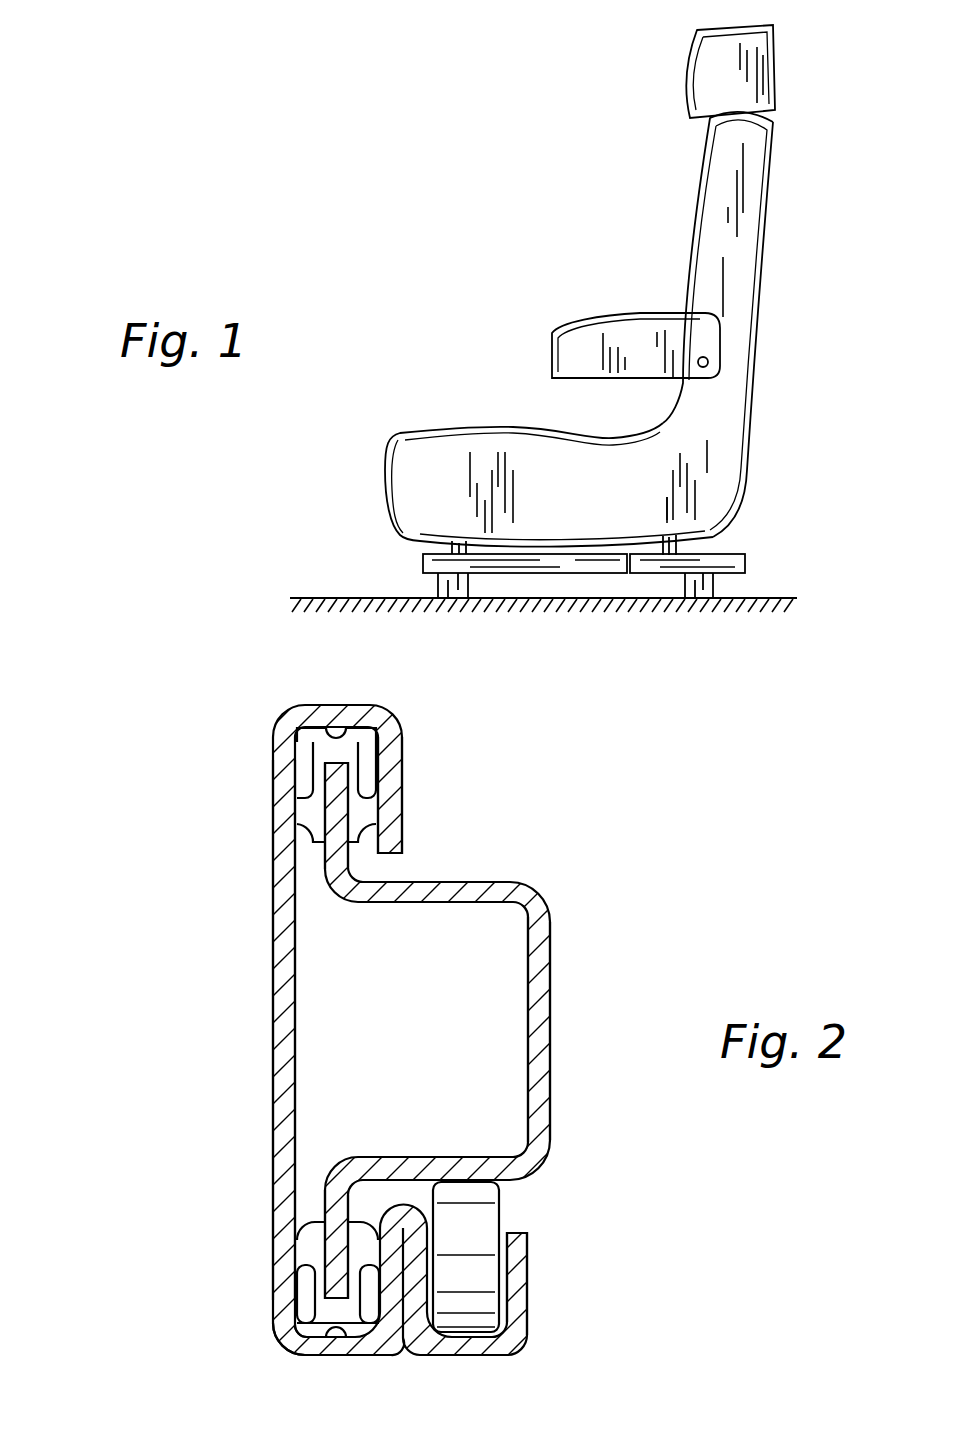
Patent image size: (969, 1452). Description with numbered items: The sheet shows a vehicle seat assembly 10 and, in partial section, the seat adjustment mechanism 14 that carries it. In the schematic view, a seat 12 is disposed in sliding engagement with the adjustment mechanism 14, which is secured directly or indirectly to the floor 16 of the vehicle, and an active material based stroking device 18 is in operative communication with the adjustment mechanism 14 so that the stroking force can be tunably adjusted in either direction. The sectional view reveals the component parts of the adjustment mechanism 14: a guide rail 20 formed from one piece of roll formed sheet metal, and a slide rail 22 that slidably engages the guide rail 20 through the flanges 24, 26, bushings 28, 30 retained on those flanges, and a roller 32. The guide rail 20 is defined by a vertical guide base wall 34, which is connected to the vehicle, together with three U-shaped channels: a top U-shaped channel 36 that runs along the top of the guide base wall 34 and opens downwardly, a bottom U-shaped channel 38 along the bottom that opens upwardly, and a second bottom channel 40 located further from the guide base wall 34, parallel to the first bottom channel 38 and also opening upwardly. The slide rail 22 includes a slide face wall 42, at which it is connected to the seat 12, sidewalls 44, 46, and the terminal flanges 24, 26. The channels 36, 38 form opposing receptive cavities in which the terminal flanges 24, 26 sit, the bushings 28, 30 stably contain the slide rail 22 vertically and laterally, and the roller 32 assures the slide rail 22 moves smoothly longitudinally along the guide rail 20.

In FIG. 1, the seat assembly 10 is at (453, 163).
In FIG. 1, the seat 12 is at (792, 217).
In FIG. 1, the adjustment mechanism 14 is at (415, 562).
In FIG. 2, the adjustment mechanism 14 is at (144, 772).
In FIG. 1, the floor 16 is at (298, 598).
In FIG. 1, the active material based stroking device 18 is at (758, 548).
In FIG. 2, the guide rail 20 is at (266, 920).
In FIG. 2, the slide rail 22 is at (555, 906).
In FIG. 2, the flange 24 is at (336, 808).
In FIG. 2, the flange 26 is at (322, 1209).
In FIG. 2, the bushing 28 is at (347, 748).
In FIG. 2, the bushing 30 is at (308, 1252).
In FIG. 2, the roller 32 is at (480, 1218).
In FIG. 2, the guide base wall 34 is at (274, 1030).
In FIG. 2, the top U-shaped channel 36 is at (403, 823).
In FIG. 2, the bottom U-shaped channel 38 is at (274, 1332).
In FIG. 2, the second bottom channel 40 is at (520, 1285).
In FIG. 2, the slide face wall 42 is at (552, 1010).
In FIG. 2, the sidewall 44 is at (438, 903).
In FIG. 2, the sidewall 46 is at (447, 1157).